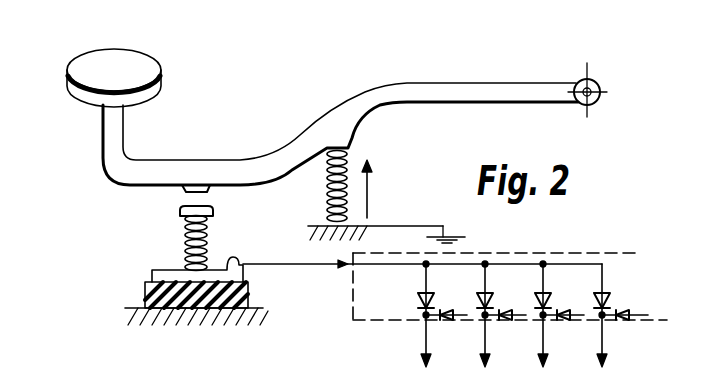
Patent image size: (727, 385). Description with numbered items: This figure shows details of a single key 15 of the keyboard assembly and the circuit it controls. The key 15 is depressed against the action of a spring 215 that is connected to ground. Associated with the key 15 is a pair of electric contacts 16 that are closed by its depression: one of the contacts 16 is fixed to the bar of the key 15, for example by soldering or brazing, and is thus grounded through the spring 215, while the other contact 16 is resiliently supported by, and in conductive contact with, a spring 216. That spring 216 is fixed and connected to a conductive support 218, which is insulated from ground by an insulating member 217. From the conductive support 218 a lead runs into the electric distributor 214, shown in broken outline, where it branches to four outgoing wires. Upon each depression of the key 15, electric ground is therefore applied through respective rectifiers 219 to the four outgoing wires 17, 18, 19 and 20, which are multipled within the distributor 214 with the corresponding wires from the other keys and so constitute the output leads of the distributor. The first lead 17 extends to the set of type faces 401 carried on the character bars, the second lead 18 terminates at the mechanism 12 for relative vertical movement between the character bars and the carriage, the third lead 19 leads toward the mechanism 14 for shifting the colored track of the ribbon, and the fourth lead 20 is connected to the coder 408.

The key 15 is at (142, 63).
The electric contacts 16 is at (192, 193).
The spring 215 is at (346, 193).
The spring 216 is at (184, 243).
The insulating member 217 is at (144, 292).
The conductive support 218 is at (212, 277).
The electric distributor 214 is at (360, 321).
The rectifiers 219 is at (418, 300).
The output lead 17 is at (423, 327).
The output lead 18 is at (482, 327).
The output lead 19 is at (541, 327).
The output lead 20 is at (600, 327).
The type faces 401 is at (443, 359).
The mechanism for relative vertical movement 12 is at (495, 359).
The mechanism for shifting the colored track of the ribbon 14 is at (553, 359).
The coder 408 is at (617, 359).